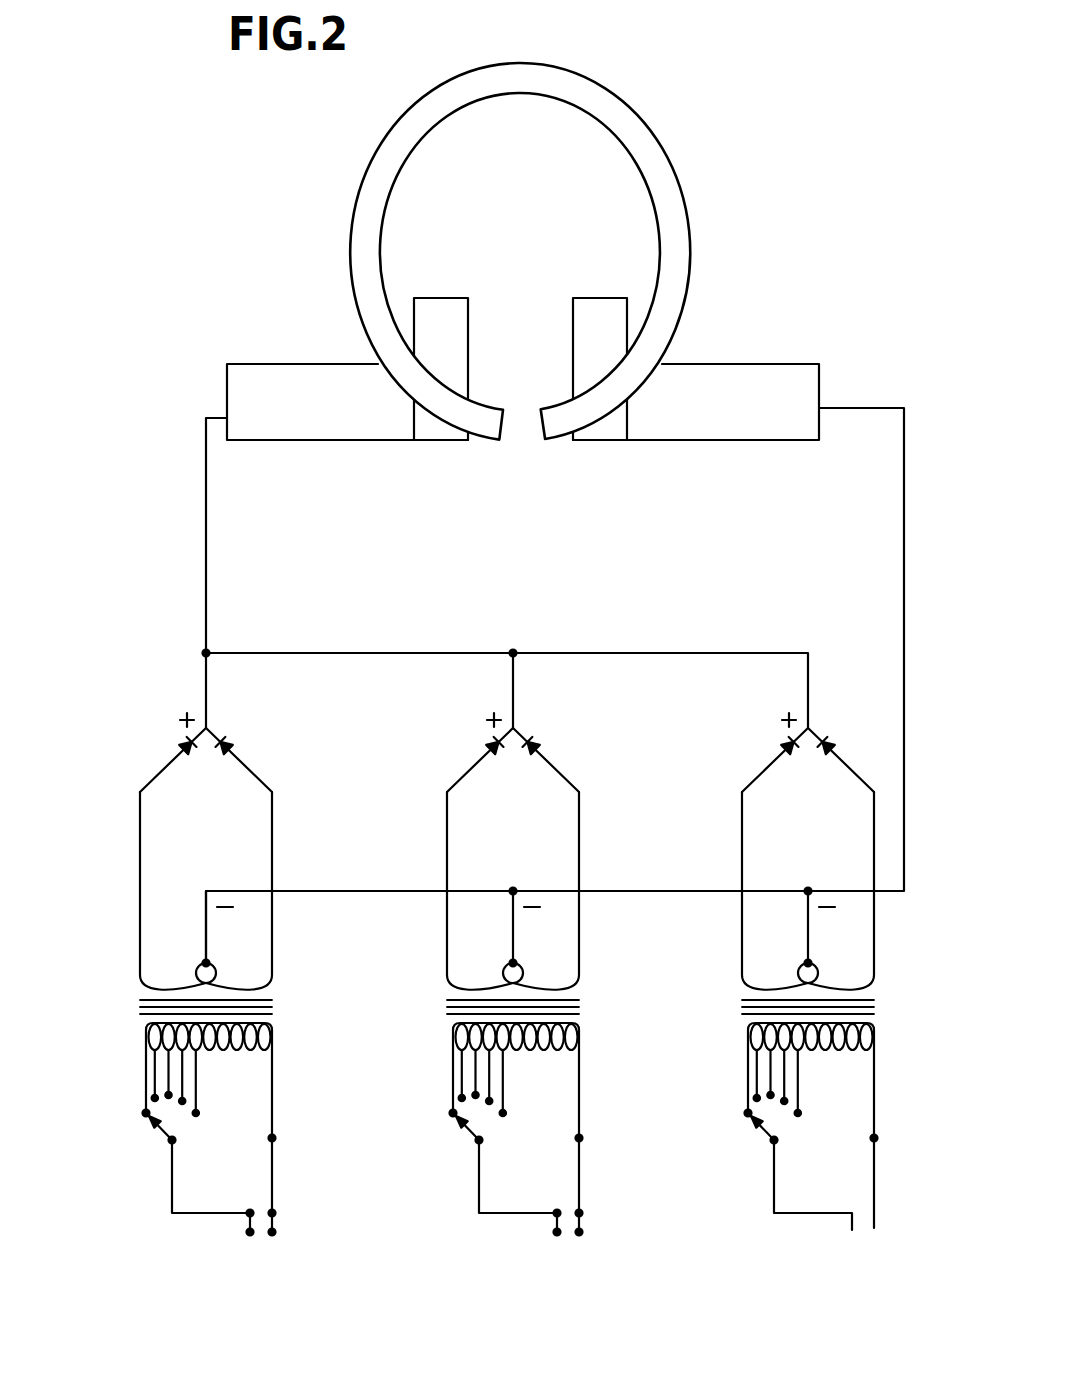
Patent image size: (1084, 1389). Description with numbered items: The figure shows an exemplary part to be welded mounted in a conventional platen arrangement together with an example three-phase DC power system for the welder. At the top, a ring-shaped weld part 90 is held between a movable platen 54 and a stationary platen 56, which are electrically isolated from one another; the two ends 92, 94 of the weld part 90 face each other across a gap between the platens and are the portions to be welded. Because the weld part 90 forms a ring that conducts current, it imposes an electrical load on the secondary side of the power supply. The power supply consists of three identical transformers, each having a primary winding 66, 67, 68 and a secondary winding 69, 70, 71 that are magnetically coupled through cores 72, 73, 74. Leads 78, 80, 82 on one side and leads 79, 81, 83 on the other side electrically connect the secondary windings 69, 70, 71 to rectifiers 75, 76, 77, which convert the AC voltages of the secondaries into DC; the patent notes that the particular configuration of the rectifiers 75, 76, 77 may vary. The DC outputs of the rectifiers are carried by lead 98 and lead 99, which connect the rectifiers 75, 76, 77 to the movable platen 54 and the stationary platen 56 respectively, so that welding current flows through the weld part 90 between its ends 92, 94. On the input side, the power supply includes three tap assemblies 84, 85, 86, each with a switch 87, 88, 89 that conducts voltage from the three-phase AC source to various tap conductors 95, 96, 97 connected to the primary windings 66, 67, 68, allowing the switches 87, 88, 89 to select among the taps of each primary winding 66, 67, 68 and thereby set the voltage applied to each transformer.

The weld part 90 is at (633, 113).
The end of weld part 92 is at (500, 415).
The end of weld part 94 is at (540, 418).
The stationary platen 56 is at (302, 364).
The movable platen 54 is at (722, 364).
The lead 99 is at (206, 527).
The lead 98 is at (904, 547).
The rectifier 75 is at (160, 772).
The rectifier 76 is at (490, 752).
The rectifier 77 is at (798, 752).
The lead 78 is at (142, 944).
The lead 79 is at (272, 936).
The lead 80 is at (454, 891).
The lead 81 is at (576, 891).
The lead 82 is at (749, 891).
The lead 83 is at (868, 891).
The secondary winding 69 is at (178, 985).
The secondary winding 70 is at (505, 938).
The secondary winding 71 is at (801, 937).
The core 72 is at (140, 1010).
The core 73 is at (487, 995).
The core 74 is at (778, 1013).
The primary winding 66 is at (222, 1050).
The primary winding 67 is at (516, 1118).
The primary winding 68 is at (811, 1125).
The tap conductors 95 is at (196, 1113).
The tap conductors 96 is at (498, 1115).
The tap conductors 97 is at (801, 1102).
The switch 87 is at (163, 1132).
The switch 88 is at (439, 1134).
The switch 89 is at (739, 1137).
The tap assembly 84 is at (134, 1178).
The tap assembly 85 is at (520, 1206).
The tap assembly 86 is at (820, 1206).